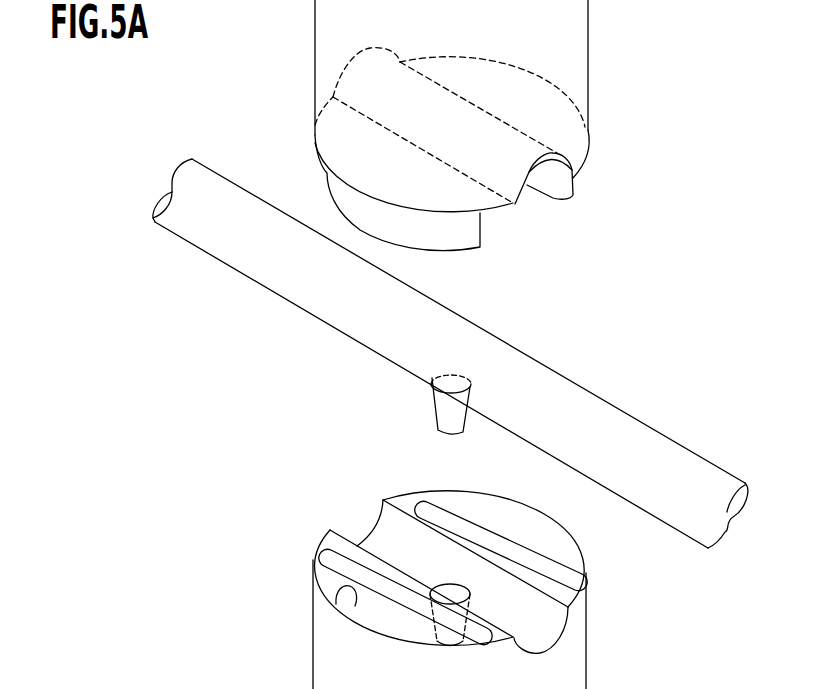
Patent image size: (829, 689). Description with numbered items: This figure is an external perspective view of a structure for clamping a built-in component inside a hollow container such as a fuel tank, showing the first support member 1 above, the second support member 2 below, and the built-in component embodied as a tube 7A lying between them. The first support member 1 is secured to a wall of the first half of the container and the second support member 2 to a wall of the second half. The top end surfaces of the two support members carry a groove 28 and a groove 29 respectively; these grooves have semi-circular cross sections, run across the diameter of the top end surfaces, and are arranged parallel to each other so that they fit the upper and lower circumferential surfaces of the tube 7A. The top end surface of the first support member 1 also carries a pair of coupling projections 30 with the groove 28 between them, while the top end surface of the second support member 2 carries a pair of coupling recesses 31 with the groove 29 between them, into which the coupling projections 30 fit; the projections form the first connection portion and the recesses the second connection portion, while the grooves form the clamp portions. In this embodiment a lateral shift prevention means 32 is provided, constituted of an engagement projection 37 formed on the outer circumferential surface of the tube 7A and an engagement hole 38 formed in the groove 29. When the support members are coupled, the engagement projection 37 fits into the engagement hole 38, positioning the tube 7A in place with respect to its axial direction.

The first support member 1 is at (498, 141).
The second support member 2 is at (462, 568).
The tube 7A is at (632, 428).
The groove 28 is at (528, 187).
The groove 29 is at (496, 582).
The coupling projection 30 is at (473, 240).
The coupling recess 31 is at (335, 587).
The lateral shift prevention means 32 is at (450, 353).
The engagement projection 37 is at (440, 413).
The engagement hole 38 is at (450, 587).